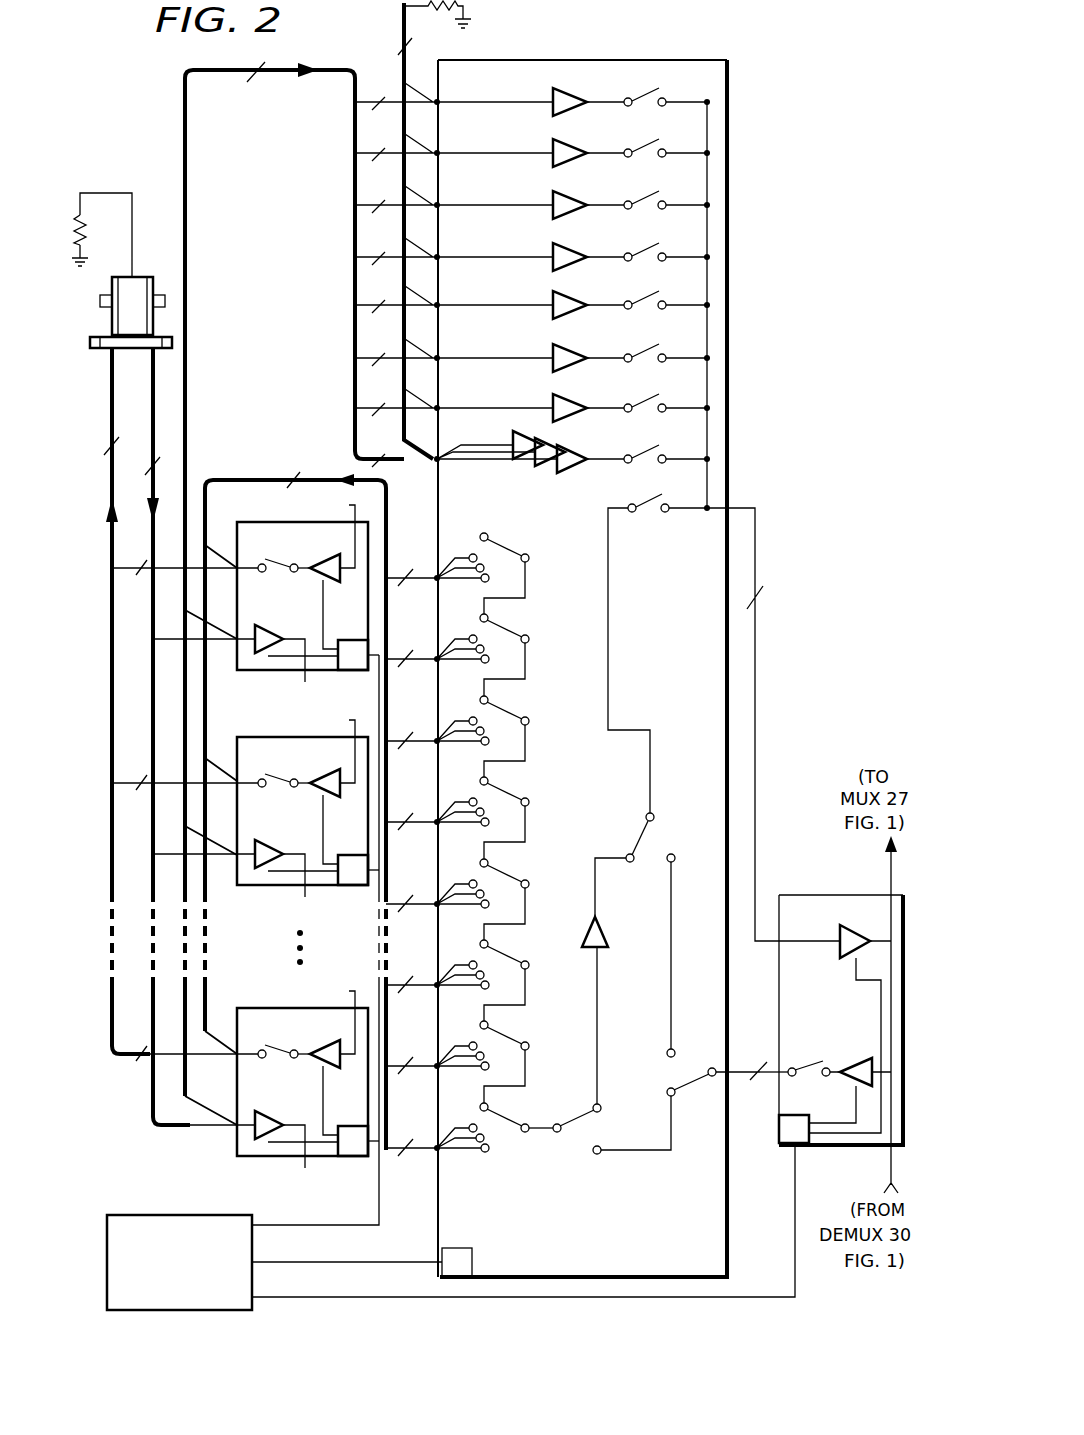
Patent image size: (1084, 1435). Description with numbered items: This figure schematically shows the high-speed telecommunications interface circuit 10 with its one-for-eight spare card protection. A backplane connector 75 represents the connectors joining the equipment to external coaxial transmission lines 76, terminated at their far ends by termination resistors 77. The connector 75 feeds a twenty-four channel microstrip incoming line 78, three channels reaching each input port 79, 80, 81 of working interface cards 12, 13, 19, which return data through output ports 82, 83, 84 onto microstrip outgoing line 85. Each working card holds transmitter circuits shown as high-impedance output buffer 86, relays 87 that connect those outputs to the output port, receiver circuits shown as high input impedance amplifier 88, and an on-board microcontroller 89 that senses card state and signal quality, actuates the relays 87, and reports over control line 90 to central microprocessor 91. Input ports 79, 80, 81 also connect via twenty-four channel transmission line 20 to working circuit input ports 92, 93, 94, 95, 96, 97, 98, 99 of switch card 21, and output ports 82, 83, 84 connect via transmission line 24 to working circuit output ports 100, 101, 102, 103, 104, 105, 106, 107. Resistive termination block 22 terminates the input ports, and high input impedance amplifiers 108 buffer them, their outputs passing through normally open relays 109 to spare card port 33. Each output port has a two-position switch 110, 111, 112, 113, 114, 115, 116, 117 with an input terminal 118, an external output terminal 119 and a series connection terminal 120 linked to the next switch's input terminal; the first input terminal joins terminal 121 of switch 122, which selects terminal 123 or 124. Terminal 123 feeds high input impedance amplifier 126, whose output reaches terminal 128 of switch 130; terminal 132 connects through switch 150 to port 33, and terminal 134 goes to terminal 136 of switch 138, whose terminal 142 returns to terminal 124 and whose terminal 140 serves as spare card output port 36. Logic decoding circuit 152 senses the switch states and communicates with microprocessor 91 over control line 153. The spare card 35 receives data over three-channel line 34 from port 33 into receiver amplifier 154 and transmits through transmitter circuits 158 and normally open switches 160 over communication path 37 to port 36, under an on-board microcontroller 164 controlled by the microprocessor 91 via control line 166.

The high-speed telecommunications interface circuit 10 is at (797, 36).
The working interface card 12 is at (360, 617).
The working interface card 13 is at (360, 832).
The working interface card 19 is at (360, 1103).
The microstrip data transmission line 20 is at (188, 206).
The switch card 21 is at (734, 133).
The resistive termination block 22 is at (436, 14).
The microstrip transmission line 24 is at (243, 478).
The spare card port 33 is at (755, 506).
The three-channel line 34 is at (759, 712).
The spare card 35 is at (832, 1150).
The spare card output port 36 is at (754, 1063).
The three-channel communication path 37 is at (758, 1082).
The backplane connector 75 is at (138, 277).
The transmission line 76 is at (118, 193).
The termination resistor 77 is at (86, 230).
The microstrip incoming line 78 is at (151, 397).
The input port 79 is at (236, 647).
The input port 80 is at (236, 862).
The input port 81 is at (236, 1130).
The output port 82 is at (240, 566).
The output port 83 is at (240, 781).
The output port 84 is at (238, 1056).
The microstrip outgoing line 85 is at (108, 645).
The high-impedance output buffer 86 is at (318, 558).
The relay 87 is at (263, 574).
The high input impedance amplifier 88 is at (284, 628).
The on-board microcontroller 89 is at (362, 672).
The control line 90 is at (280, 1226).
The central microprocessor 91 is at (172, 1215).
The working circuit input port 92 is at (440, 99).
The working circuit input port 93 is at (440, 150).
The working circuit input port 94 is at (440, 202).
The working circuit input port 95 is at (440, 254).
The working circuit input port 96 is at (440, 302).
The working circuit input port 97 is at (440, 355).
The working circuit input port 98 is at (440, 405).
The working circuit input port 99 is at (438, 466).
The working circuit output port 100 is at (435, 575).
The working circuit output port 101 is at (435, 656).
The working circuit output port 102 is at (435, 738).
The working circuit output port 103 is at (435, 819).
The working circuit output port 104 is at (435, 901).
The working circuit output port 105 is at (435, 982).
The working circuit output port 106 is at (435, 1063).
The working circuit output port 107 is at (435, 1145).
The high input impedance amplifier 108 is at (583, 93).
The normally open switch 109 is at (657, 110).
The three-terminal two-position switch 110 is at (489, 1138).
The three-terminal two-position switch 111 is at (495, 1044).
The three-terminal two-position switch 112 is at (495, 963).
The three-terminal two-position switch 113 is at (495, 882).
The three-terminal two-position switch 114 is at (495, 800).
The three-terminal two-position switch 115 is at (495, 719).
The three-terminal two-position switch 116 is at (495, 637).
The three-terminal two-position switch 117 is at (495, 556).
The input terminal 118 is at (531, 1048).
The external output terminal 119 is at (488, 1156).
The series connection terminal 120 is at (483, 1105).
The terminal 121 is at (557, 1124).
The switch 122 is at (592, 1134).
The terminal 123 is at (602, 1107).
The terminal 124 is at (599, 1156).
The high input impedance amplifier 126 is at (606, 926).
The terminal 128 is at (626, 855).
The switch 130 is at (657, 840).
The terminal 132 is at (645, 812).
The terminal 134 is at (674, 855).
The terminal 136 is at (676, 1045).
The switch 138 is at (668, 1058).
The terminal 140 is at (712, 1078).
The terminal 142 is at (666, 1100).
The switch 150 is at (650, 518).
The logic decoding circuit 152 is at (441, 1268).
The control line 153 is at (440, 1258).
The high input impedance amplifier 154 is at (838, 948).
The transmitter circuit 158 is at (857, 1060).
The normally open switch 160 is at (810, 1066).
The on-board microcontroller 164 is at (780, 1128).
The control line 166 is at (763, 1296).